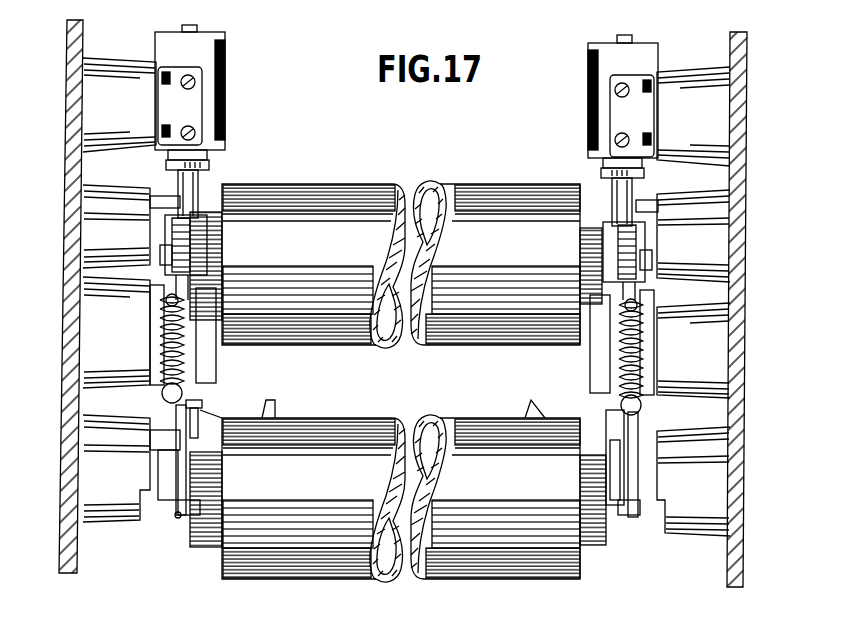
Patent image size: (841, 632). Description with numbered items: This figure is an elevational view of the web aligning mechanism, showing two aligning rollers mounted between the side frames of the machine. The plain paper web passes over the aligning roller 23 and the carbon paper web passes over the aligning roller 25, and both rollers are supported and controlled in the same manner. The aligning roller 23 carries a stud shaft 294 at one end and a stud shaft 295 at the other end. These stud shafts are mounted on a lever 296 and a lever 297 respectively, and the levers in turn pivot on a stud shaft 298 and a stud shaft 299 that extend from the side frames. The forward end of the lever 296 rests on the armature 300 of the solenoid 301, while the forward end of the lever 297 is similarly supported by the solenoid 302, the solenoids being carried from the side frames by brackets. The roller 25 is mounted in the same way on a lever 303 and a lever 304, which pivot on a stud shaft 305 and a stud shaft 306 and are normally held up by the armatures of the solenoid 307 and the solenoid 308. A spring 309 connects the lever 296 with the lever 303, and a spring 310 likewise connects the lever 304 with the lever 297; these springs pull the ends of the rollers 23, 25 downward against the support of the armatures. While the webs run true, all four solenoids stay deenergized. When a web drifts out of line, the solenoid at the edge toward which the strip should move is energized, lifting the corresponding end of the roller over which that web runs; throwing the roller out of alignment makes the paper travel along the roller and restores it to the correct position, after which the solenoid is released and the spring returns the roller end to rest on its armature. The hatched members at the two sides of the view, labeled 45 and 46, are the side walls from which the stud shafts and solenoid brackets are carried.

The aligning roller 23 is at (398, 491).
The aligning roller 25 is at (396, 264).
The left side wall 45 is at (74, 103).
The right side wall 46 is at (744, 112).
The stud shaft 294 is at (175, 516).
The stud shaft 295 is at (618, 507).
The lever 296 is at (168, 468).
The lever 297 is at (700, 443).
The stud shaft 298 is at (157, 447).
The stud shaft 299 is at (645, 512).
The armature 300 is at (200, 412).
The solenoid 301 is at (208, 358).
The solenoid 302 is at (655, 295).
The lever 303 is at (176, 256).
The lever 304 is at (612, 262).
The stud shaft 305 is at (165, 202).
The stud shaft 306 is at (646, 228).
The solenoid 307 is at (218, 95).
The solenoid 308 is at (658, 62).
The spring 309 is at (163, 385).
The spring 310 is at (642, 392).